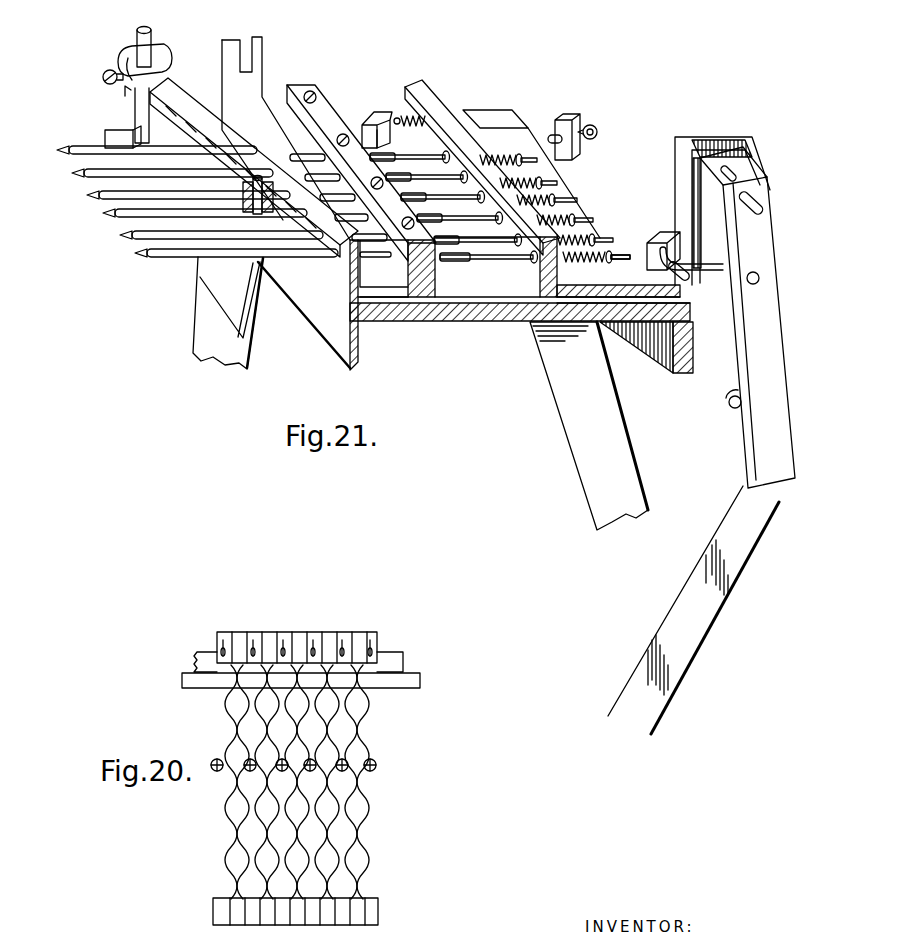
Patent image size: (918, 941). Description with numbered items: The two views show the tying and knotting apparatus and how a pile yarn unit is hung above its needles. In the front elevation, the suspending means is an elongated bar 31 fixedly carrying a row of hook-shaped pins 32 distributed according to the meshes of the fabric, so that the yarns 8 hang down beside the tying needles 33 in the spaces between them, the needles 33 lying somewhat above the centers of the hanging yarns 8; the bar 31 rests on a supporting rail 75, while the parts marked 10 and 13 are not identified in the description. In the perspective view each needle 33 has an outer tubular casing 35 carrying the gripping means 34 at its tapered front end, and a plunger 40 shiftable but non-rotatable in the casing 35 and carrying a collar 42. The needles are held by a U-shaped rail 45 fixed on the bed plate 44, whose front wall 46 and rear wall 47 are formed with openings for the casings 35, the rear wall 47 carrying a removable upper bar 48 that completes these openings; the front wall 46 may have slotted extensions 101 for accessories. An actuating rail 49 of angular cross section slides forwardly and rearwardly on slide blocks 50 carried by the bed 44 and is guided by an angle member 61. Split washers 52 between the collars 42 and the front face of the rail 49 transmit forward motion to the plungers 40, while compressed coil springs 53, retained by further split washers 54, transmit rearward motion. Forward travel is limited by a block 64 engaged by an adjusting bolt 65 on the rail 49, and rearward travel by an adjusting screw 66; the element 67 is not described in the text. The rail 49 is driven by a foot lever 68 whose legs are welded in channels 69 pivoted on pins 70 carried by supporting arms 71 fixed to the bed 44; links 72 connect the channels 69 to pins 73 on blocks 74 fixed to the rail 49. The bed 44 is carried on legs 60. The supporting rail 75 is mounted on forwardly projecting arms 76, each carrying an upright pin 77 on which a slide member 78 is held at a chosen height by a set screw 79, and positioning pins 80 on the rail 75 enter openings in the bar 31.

In FIG. 20, the yarns 8 is at (297, 840).
In FIG. 20, the upper needle comb 10 is at (230, 632).
In FIG. 20, the lower comb bar 13 is at (213, 912).
In FIG. 21, the elongated bar 31 is at (187, 103).
In FIG. 20, the elongated bar 31 is at (394, 665).
In FIG. 21, the hook-shaped pins 32 is at (144, 107).
In FIG. 20, the hook-shaped pins 32 is at (304, 642).
In FIG. 21, the tying needles 33 is at (83, 165).
In FIG. 20, the tying needles 33 is at (344, 768).
In FIG. 21, the gripping means 34 is at (122, 235).
In FIG. 21, the outer tubular casing 35 is at (432, 305).
In FIG. 21, the plunger 40 is at (497, 262).
In FIG. 21, the collar 42 is at (532, 265).
In FIG. 21, the bed plate 44 is at (500, 310).
In FIG. 21, the rail 45 is at (423, 348).
In FIG. 21, the front wall 46 is at (367, 292).
In FIG. 21, the rear wall 47 is at (457, 310).
In FIG. 21, the upper bar 48 is at (450, 262).
In FIG. 21, the actuating rail 49 is at (428, 102).
In FIG. 21, the slide blocks 50 is at (391, 136).
In FIG. 21, the split bendable washers 52 is at (620, 257).
In FIG. 21, the coil springs 53 is at (550, 187).
In FIG. 21, the split washers 54 is at (592, 233).
In FIG. 21, the legs 60 is at (210, 339).
In FIG. 21, the angle member 61 is at (487, 122).
In FIG. 21, the limiting block 64 is at (375, 112).
In FIG. 21, the adjusting bolt 65 is at (403, 116).
In FIG. 21, the adjusting screw 66 is at (596, 131).
In FIG. 21, the bracket 67 is at (564, 125).
In FIG. 21, the foot lever 68 is at (697, 598).
In FIG. 21, the channels 69 is at (768, 428).
In FIG. 21, the pivot pins 70 is at (758, 204).
In FIG. 21, the supporting arms 71 is at (722, 140).
In FIG. 21, the links 72 is at (708, 278).
In FIG. 21, the pins 73 is at (656, 271).
In FIG. 21, the blocks 74 is at (660, 236).
In FIG. 21, the supporting rail 75 is at (128, 92).
In FIG. 20, the supporting rail 75 is at (410, 688).
In FIG. 21, the forwardly projecting arms 76 is at (108, 138).
In FIG. 21, the upwardly directed pin 77 is at (139, 36).
In FIG. 21, the slide member 78 is at (126, 60).
In FIG. 21, the set screw 79 is at (103, 77).
In FIG. 21, the positioning pins 80 is at (200, 276).
In FIG. 21, the slotted extensions 101 is at (222, 50).